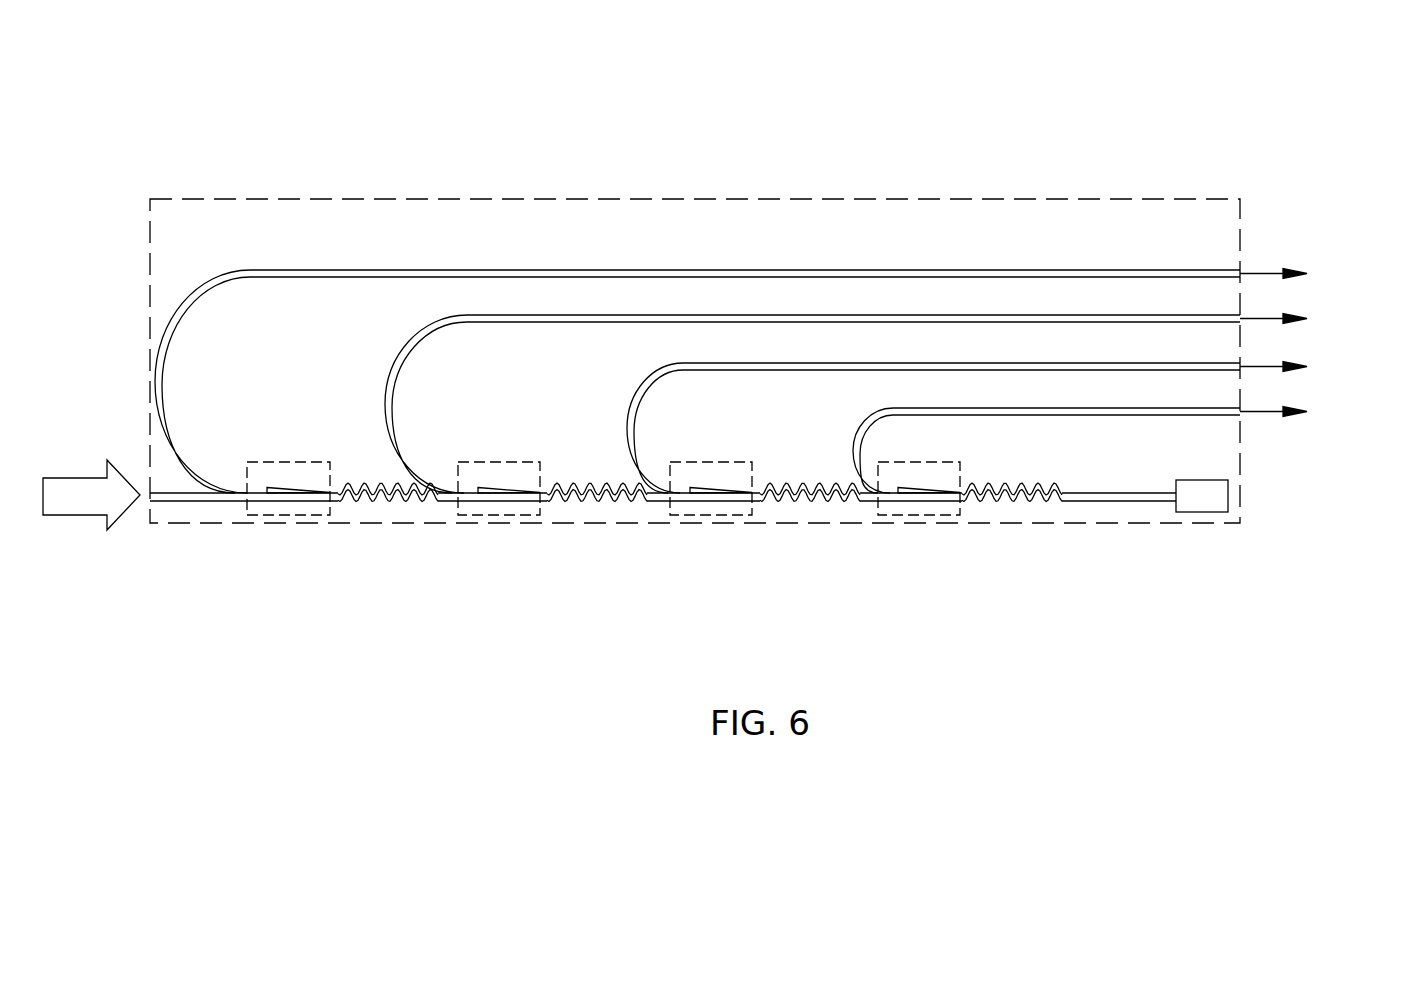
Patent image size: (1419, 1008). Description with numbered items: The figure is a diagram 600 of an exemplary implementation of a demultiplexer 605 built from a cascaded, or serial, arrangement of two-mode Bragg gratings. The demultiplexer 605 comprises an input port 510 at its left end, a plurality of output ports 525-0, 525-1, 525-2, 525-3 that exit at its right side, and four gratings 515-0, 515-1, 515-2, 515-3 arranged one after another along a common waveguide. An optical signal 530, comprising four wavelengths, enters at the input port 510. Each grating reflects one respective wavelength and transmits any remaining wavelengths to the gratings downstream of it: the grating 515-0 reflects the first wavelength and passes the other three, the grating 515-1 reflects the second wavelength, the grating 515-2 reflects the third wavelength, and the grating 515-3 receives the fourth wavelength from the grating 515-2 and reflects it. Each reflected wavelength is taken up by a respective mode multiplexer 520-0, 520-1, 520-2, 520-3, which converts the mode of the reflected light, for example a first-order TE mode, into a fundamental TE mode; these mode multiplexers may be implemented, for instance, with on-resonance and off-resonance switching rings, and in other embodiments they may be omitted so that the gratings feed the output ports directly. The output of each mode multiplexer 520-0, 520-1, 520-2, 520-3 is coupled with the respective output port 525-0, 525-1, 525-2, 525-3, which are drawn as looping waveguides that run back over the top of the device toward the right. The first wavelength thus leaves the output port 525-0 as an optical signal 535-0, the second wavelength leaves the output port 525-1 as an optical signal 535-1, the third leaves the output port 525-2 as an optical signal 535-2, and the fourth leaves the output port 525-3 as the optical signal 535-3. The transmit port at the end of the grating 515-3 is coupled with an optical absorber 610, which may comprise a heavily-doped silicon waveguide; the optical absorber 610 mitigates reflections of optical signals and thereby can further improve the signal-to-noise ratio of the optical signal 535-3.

The diagram 600 is at (1328, 120).
The demultiplexer 605 is at (1082, 199).
The input port 510 is at (203, 502).
The two-mode Bragg grating 515-0 is at (385, 500).
The two-mode Bragg grating 515-1 is at (580, 502).
The two-mode Bragg grating 515-2 is at (812, 502).
The two-mode Bragg grating 515-3 is at (1050, 502).
The mode multiplexer 520-0 is at (297, 515).
The mode multiplexer 520-1 is at (505, 515).
The mode multiplexer 520-2 is at (708, 515).
The mode multiplexer 520-3 is at (925, 515).
The output port 525-0 is at (1197, 268).
The output port 525-1 is at (1153, 313).
The output port 525-2 is at (1109, 361).
The output port 525-3 is at (1071, 406).
The optical signal 530 is at (73, 515).
The optical signal 535-0 is at (1310, 277).
The optical signal 535-1 is at (1310, 322).
The optical signal 535-2 is at (1310, 370).
The optical signal 535-3 is at (1310, 415).
The optical absorber 610 is at (1200, 512).